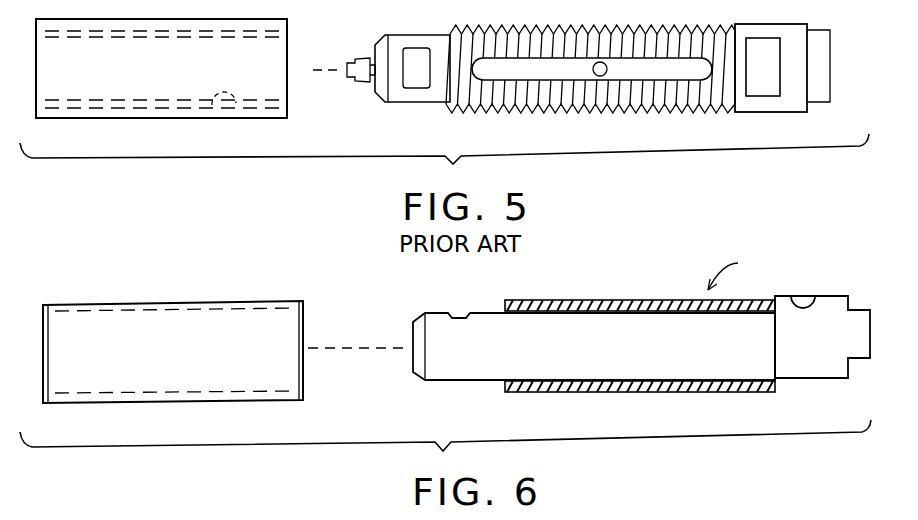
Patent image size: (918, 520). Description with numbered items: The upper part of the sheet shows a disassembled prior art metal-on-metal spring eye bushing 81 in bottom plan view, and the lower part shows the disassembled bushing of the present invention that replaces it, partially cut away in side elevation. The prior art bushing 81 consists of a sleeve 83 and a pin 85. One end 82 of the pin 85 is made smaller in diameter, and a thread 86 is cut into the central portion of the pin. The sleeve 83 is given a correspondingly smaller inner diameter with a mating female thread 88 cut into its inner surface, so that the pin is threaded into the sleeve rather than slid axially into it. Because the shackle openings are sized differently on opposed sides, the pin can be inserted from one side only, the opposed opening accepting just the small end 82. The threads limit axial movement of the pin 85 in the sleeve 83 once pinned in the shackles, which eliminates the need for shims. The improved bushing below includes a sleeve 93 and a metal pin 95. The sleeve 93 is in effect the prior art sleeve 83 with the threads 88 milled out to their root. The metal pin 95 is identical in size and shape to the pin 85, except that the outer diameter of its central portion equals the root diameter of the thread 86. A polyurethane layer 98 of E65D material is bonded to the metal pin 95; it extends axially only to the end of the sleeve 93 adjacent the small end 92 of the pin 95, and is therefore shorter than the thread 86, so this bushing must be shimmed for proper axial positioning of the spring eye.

In FIG. 5, the modified conventional bushing 81 is at (573, 119).
In FIG. 5, the small end of the pin 82 is at (400, 102).
In FIG. 5, the sleeve 83 is at (88, 118).
In FIG. 5, the pin 85 is at (757, 112).
In FIG. 5, the thread 86 is at (637, 115).
In FIG. 5, the female thread 88 is at (206, 104).
In FIG. 6, the small end of the pin 92 is at (472, 382).
In FIG. 6, the sleeve 93 is at (178, 302).
In FIG. 6, the metal pin 95 is at (740, 272).
In FIG. 6, the polyurethane layer 98 is at (663, 262).